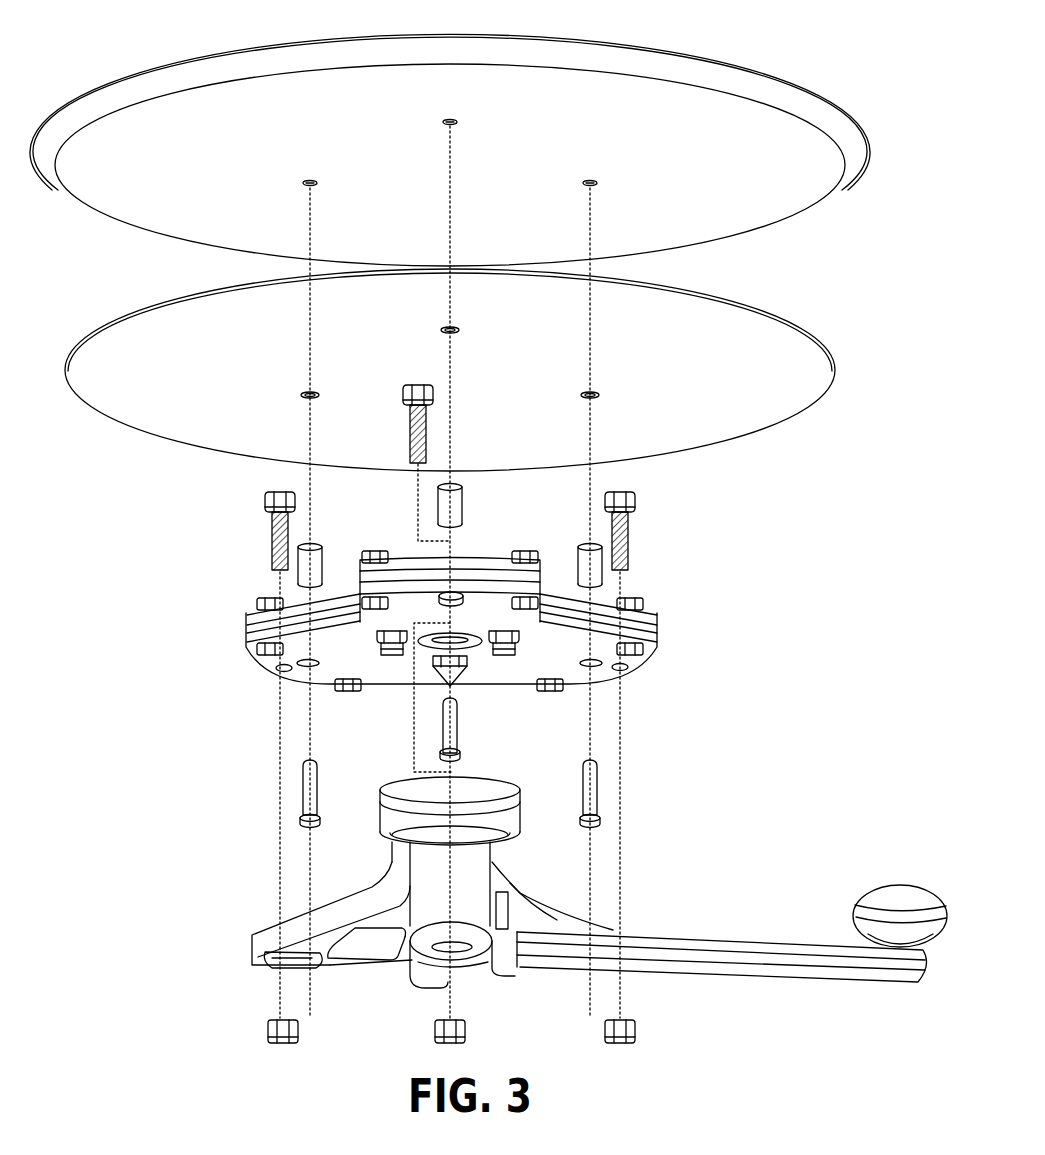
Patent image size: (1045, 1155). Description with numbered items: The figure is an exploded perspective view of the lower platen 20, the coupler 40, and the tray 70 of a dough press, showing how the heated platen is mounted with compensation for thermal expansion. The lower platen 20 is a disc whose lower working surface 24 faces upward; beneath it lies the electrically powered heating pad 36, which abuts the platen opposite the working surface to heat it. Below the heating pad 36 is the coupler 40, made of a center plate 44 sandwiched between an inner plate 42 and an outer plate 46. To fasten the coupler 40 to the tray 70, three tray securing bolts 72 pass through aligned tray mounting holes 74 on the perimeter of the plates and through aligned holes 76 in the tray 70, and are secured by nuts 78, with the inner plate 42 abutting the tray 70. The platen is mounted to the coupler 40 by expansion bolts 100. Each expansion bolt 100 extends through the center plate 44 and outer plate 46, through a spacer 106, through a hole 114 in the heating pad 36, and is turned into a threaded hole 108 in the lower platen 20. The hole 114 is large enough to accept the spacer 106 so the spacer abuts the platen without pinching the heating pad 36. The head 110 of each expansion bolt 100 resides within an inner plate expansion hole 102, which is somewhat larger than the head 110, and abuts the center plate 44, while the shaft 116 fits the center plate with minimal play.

The lower platen 20 is at (450, 137).
The lower working surface 24 is at (688, 52).
The heating pad 36 is at (450, 361).
The coupler 40 is at (446, 627).
The inner plate 42 is at (658, 641).
The center plate 44 is at (658, 630).
The outer plate 46 is at (658, 617).
The tray 70 is at (584, 892).
The tray securing bolt 72 is at (410, 432).
The tray mounting hole 74 is at (282, 669).
The hole 76 is at (452, 838).
The nut 78 is at (270, 1030).
The expansion bolt 100 is at (487, 773).
The inner plate expansion hole 102 is at (320, 663).
The spacer 106 is at (323, 553).
The threaded hole 108 is at (312, 182).
The head 110 is at (313, 826).
The hole 114 is at (322, 392).
The shaft 116 is at (318, 768).